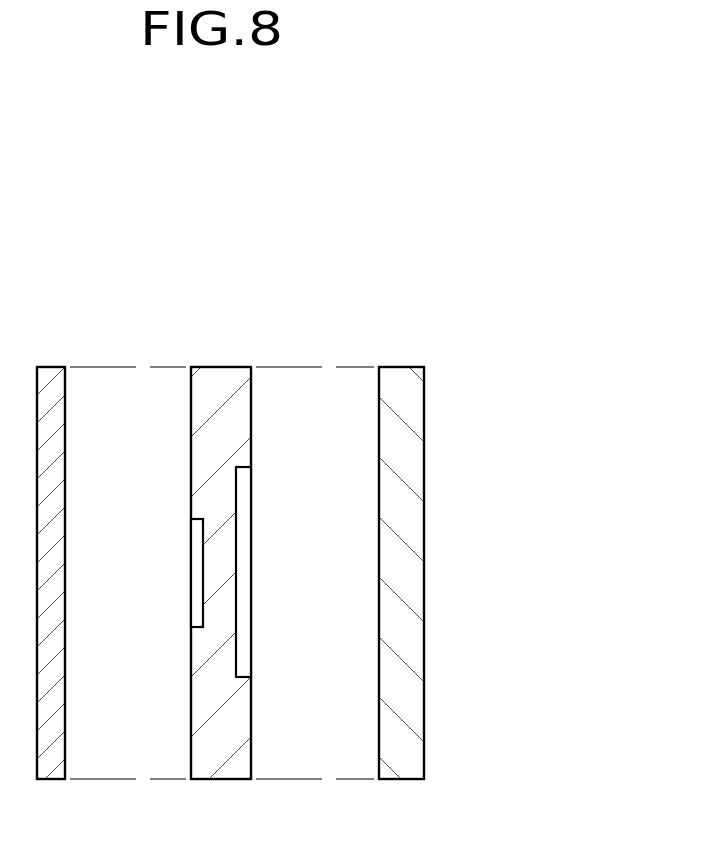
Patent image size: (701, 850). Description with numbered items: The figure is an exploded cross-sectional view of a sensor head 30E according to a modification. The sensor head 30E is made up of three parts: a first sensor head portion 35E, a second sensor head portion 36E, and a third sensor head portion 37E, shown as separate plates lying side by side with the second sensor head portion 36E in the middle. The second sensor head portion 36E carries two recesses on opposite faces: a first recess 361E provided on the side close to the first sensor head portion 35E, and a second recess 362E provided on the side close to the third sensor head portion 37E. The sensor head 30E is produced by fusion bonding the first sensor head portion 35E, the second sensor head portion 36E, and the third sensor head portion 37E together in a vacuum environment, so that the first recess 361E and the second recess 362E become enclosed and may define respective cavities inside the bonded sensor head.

The sensor head 30E is at (428, 253).
The first sensor head portion 35E is at (398, 366).
The second sensor head portion 36E is at (220, 366).
The first recess 361E is at (241, 651).
The second recess 362E is at (194, 600).
The third sensor head portion 37E is at (48, 366).